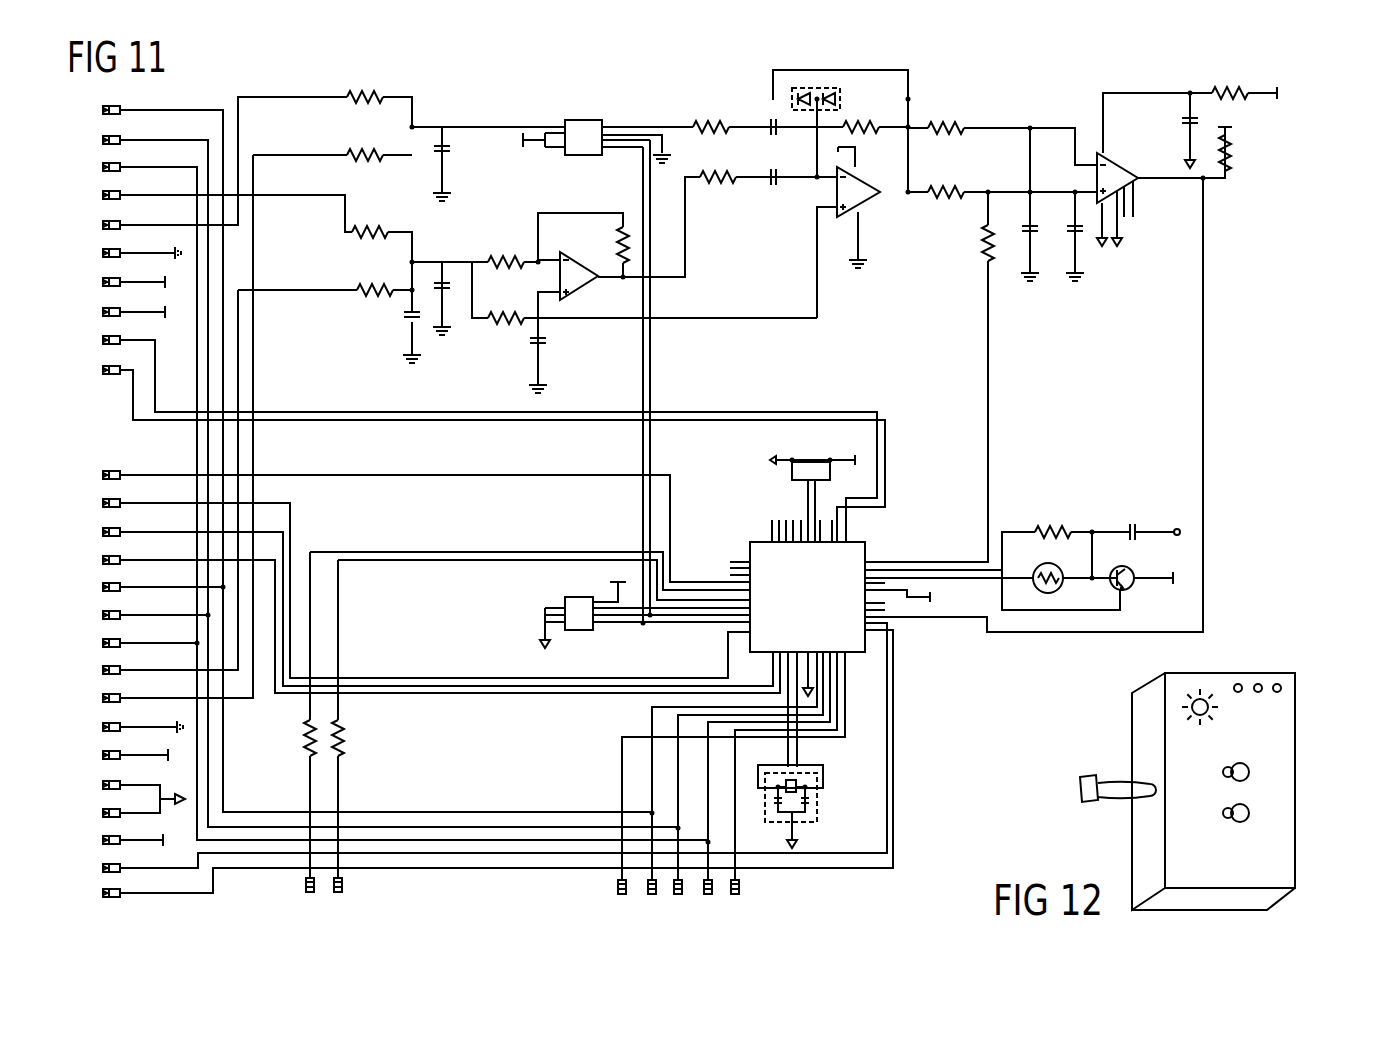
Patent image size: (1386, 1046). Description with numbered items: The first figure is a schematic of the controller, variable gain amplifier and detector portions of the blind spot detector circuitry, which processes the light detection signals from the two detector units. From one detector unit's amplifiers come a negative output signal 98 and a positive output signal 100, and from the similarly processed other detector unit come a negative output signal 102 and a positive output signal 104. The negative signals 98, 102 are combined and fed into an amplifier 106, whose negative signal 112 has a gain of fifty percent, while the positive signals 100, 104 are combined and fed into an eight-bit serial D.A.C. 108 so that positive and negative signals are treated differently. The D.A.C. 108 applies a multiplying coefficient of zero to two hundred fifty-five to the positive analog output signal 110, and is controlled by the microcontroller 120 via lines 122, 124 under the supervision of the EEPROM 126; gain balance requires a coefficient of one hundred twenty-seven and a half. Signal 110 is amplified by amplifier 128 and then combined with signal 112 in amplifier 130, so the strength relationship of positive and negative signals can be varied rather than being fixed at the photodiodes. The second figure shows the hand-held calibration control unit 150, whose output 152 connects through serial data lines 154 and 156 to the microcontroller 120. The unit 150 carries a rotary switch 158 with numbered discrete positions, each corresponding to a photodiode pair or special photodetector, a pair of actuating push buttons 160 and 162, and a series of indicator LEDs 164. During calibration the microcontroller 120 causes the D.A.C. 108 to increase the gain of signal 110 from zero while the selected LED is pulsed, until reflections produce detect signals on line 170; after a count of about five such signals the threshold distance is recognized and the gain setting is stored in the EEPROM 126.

In FIG. 11, the negative output signal 98 is at (307, 195).
In FIG. 11, the positive output signal 100 is at (287, 97).
In FIG. 11, the negative output signal 102 is at (322, 250).
In FIG. 11, the positive output signal 104 is at (297, 155).
In FIG. 11, the amplifier 106 is at (578, 292).
In FIG. 11, the 8-bit serial D.A.C. 108 is at (578, 120).
In FIG. 11, the positive analog output signal 110 is at (680, 127).
In FIG. 11, the negative signal 112 is at (685, 222).
In FIG. 11, the microcontroller 120 is at (885, 530).
In FIG. 11, the control line 122 is at (643, 432).
In FIG. 11, the control line 124 is at (650, 460).
In FIG. 11, the EEPROM 126 is at (565, 600).
In FIG. 11, the amplifier 128 is at (868, 200).
In FIG. 11, the amplifier 130 is at (1120, 155).
In FIG. 12, the hand-held calibration control unit 150 is at (1222, 673).
In FIG. 12, the output 152 is at (1088, 777).
In FIG. 11, the serial data line 154 is at (310, 885).
In FIG. 11, the serial data line 156 is at (342, 882).
In FIG. 12, the rotary switch 158 is at (1188, 706).
In FIG. 12, the actuating push button 160 is at (1247, 768).
In FIG. 12, the actuating push button 162 is at (1247, 817).
In FIG. 12, the indicator LEDs 164 is at (1240, 684).
In FIG. 11, the detect signal line 170 is at (1203, 375).